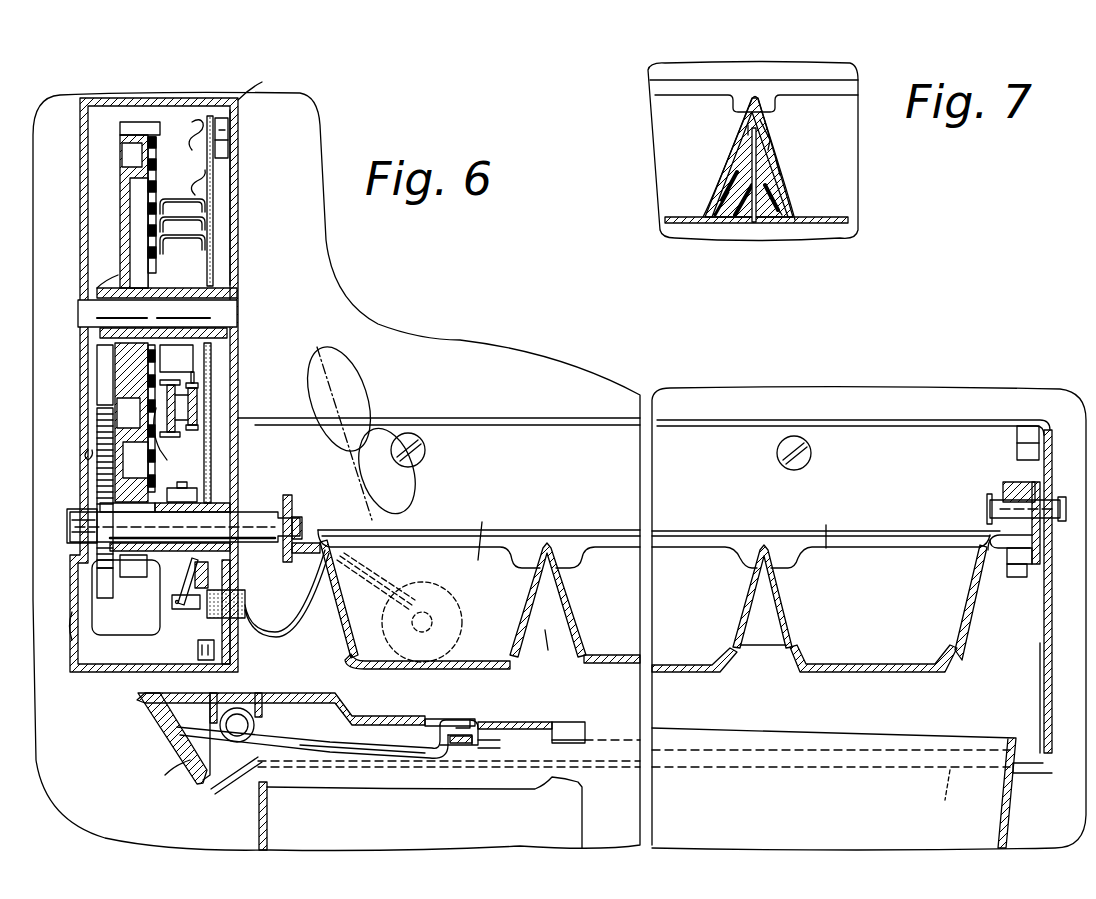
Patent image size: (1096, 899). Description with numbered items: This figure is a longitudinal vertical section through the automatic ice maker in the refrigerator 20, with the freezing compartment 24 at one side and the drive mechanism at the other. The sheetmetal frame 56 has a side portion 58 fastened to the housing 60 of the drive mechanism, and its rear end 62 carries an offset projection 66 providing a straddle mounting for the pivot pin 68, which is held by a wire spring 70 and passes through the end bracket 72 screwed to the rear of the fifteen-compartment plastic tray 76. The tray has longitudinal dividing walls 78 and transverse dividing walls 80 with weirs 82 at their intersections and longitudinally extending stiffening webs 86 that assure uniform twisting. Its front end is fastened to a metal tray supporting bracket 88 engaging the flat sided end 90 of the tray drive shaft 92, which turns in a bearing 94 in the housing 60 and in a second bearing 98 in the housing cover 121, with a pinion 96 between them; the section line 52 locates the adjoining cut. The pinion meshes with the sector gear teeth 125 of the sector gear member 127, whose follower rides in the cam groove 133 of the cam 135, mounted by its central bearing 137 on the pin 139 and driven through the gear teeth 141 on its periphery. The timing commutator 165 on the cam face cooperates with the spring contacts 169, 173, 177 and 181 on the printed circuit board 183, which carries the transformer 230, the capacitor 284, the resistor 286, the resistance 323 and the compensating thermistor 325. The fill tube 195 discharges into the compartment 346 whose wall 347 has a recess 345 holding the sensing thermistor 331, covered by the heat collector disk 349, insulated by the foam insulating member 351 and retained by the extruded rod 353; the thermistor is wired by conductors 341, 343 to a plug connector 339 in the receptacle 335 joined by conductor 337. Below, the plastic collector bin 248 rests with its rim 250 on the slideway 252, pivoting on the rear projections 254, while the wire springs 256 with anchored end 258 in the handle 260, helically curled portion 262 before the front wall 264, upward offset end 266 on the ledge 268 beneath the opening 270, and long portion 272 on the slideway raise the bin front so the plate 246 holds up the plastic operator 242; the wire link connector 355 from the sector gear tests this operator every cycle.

In FIG. 6, the cabinet 20 is at (816, 388).
In FIG. 6, the compartment 24 is at (439, 400).
In FIG. 6, the wall 52 is at (238, 118).
In FIG. 6, the frame 56 is at (705, 420).
In FIG. 6, the side portion 58 is at (742, 440).
In FIG. 6, the housing 60 is at (256, 82).
In FIG. 6, the rear end 62 is at (1050, 420).
In FIG. 6, the offset projection 66 is at (1005, 485).
In FIG. 6, the pivot pin 68 is at (1052, 505).
In FIG. 6, the wire spring 70 is at (988, 509).
In FIG. 6, the end bracket 72 is at (1037, 578).
In FIG. 6, the plastic tray 76 is at (868, 532).
In FIG. 7, the plastic tray 76 is at (815, 80).
In FIG. 6, the longitudinal dividing walls 78 is at (827, 526).
In FIG. 7, the longitudinal dividing walls 78 is at (752, 95).
In FIG. 6, the transverse dividing walls 80 is at (575, 600).
In FIG. 6, the weirs 82 is at (547, 546).
In FIG. 7, the weirs 82 is at (672, 80).
In FIG. 6, the stiffening webs 86 is at (545, 632).
In FIG. 6, the tray supporting bracket 88 is at (300, 520).
In FIG. 6, the flat sided end 90 is at (318, 545).
In FIG. 6, the tray drive shaft 92 is at (292, 512).
In FIG. 6, the bearing 94 is at (283, 515).
In FIG. 6, the pinion 96 is at (92, 566).
In FIG. 6, the second bearing 98 is at (78, 510).
In FIG. 6, the housing cover 121 is at (80, 128).
In FIG. 6, the sector gear teeth 125 is at (97, 435).
In FIG. 6, the sector gear member 127 is at (100, 375).
In FIG. 6, the cam groove 133 is at (122, 150).
In FIG. 6, the cam 135 is at (130, 182).
In FIG. 6, the central bearing 137 is at (105, 287).
In FIG. 6, the pin 139 is at (220, 305).
In FIG. 6, the gear teeth 141 is at (140, 128).
In FIG. 6, the timing commutator 165 is at (158, 140).
In FIG. 6, the spring contact 169 is at (182, 246).
In FIG. 6, the spring contact 173 is at (205, 212).
In FIG. 6, the spring contact 177 is at (172, 199).
In FIG. 6, the spring contact 181 is at (177, 439).
In FIG. 6, the printed circuit board 183 is at (213, 168).
In FIG. 6, the fill tube 195 is at (365, 385).
In FIG. 6, the transformer 230 is at (137, 570).
In FIG. 6, the plastic operator 242 is at (205, 695).
In FIG. 6, the plate 246 is at (345, 705).
In FIG. 6, the plastic collector bin 248 is at (875, 735).
In FIG. 6, the rim 250 is at (612, 725).
In FIG. 6, the slideway 252 is at (218, 795).
In FIG. 6, the projections 254 is at (944, 797).
In FIG. 6, the wire springs 256 is at (335, 789).
In FIG. 6, the anchored end 258 is at (177, 727).
In FIG. 6, the handle 260 is at (165, 775).
In FIG. 6, the helically curled portion 262 is at (254, 722).
In FIG. 6, the front wall 264 is at (262, 805).
In FIG. 6, the upward offset end 266 is at (490, 722).
In FIG. 6, the ledge 268 is at (460, 748).
In FIG. 6, the opening 270 is at (454, 722).
In FIG. 6, the long portion 272 is at (380, 756).
In FIG. 6, the capacitor 284 is at (185, 492).
In FIG. 6, the resistor 286 is at (200, 645).
In FIG. 6, the resistance 323 is at (176, 400).
In FIG. 6, the compensating thermistor 325 is at (198, 395).
In FIG. 6, the sensing thermistor 331 is at (428, 612).
In FIG. 7, the sensing thermistor 331 is at (780, 165).
In FIG. 6, the receptacle 335 is at (172, 600).
In FIG. 6, the conductor 337 is at (210, 572).
In FIG. 6, the plug connector 339 is at (246, 598).
In FIG. 6, the conductor 341 is at (272, 612).
In FIG. 6, the conductor 343 is at (338, 598).
In FIG. 7, the recess 345 is at (783, 180).
In FIG. 6, the compartment 346 is at (376, 581).
In FIG. 6, the wall 347 is at (491, 532).
In FIG. 7, the wall 347 is at (772, 140).
In FIG. 6, the heat collector disk 349 is at (457, 625).
In FIG. 7, the heat collector disk 349 is at (775, 215).
In FIG. 7, the foam insulating member 351 is at (724, 215).
In FIG. 7, the extruded rod 353 is at (753, 222).
In FIG. 6, the wire link connector 355 is at (88, 454).